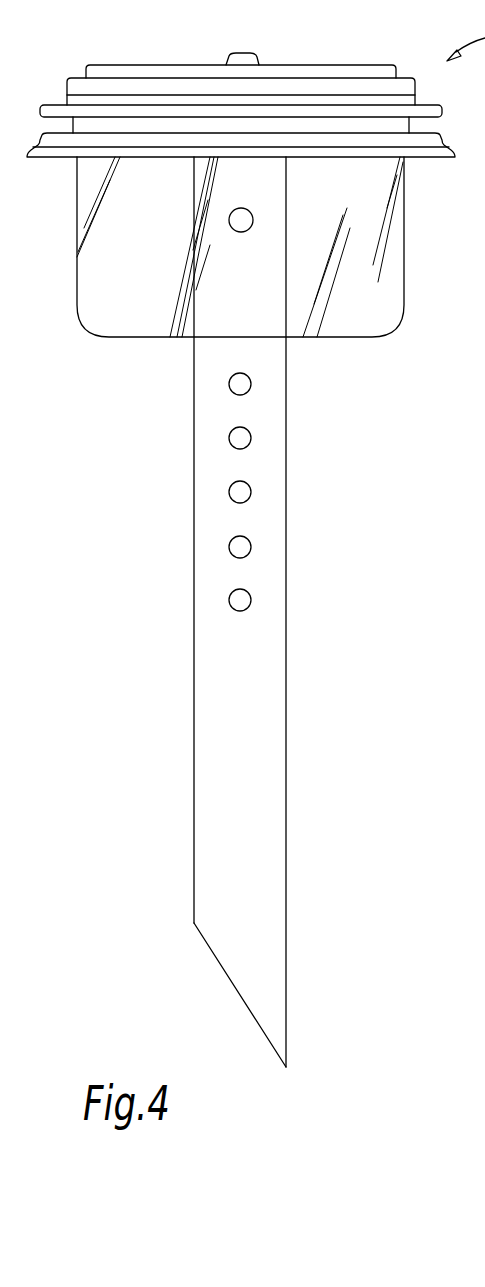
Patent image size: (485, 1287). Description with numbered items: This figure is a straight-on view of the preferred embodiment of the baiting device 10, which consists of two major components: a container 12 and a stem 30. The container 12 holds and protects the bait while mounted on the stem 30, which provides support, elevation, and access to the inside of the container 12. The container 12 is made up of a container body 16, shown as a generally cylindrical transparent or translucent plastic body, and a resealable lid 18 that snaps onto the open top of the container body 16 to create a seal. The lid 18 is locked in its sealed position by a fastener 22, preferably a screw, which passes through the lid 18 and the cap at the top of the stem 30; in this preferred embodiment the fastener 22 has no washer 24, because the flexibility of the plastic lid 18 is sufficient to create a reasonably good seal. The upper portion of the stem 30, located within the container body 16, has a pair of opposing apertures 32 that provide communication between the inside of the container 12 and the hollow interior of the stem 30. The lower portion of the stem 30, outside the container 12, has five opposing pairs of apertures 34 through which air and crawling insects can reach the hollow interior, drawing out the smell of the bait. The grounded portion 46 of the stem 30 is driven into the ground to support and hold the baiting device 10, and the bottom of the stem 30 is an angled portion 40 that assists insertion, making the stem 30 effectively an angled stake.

The baiting device 10 is at (484, 421).
The container 12 is at (405, 195).
The container body 16 is at (404, 293).
The resealable lid 18 is at (397, 72).
The fastener 22 is at (243, 53).
The washer 24 is at (226, 63).
The stem 30 is at (115, 552).
The apertures 32 is at (241, 220).
The apertures 34 is at (240, 384).
The angled portion 40 is at (237, 993).
The grounded portion 46 is at (287, 849).